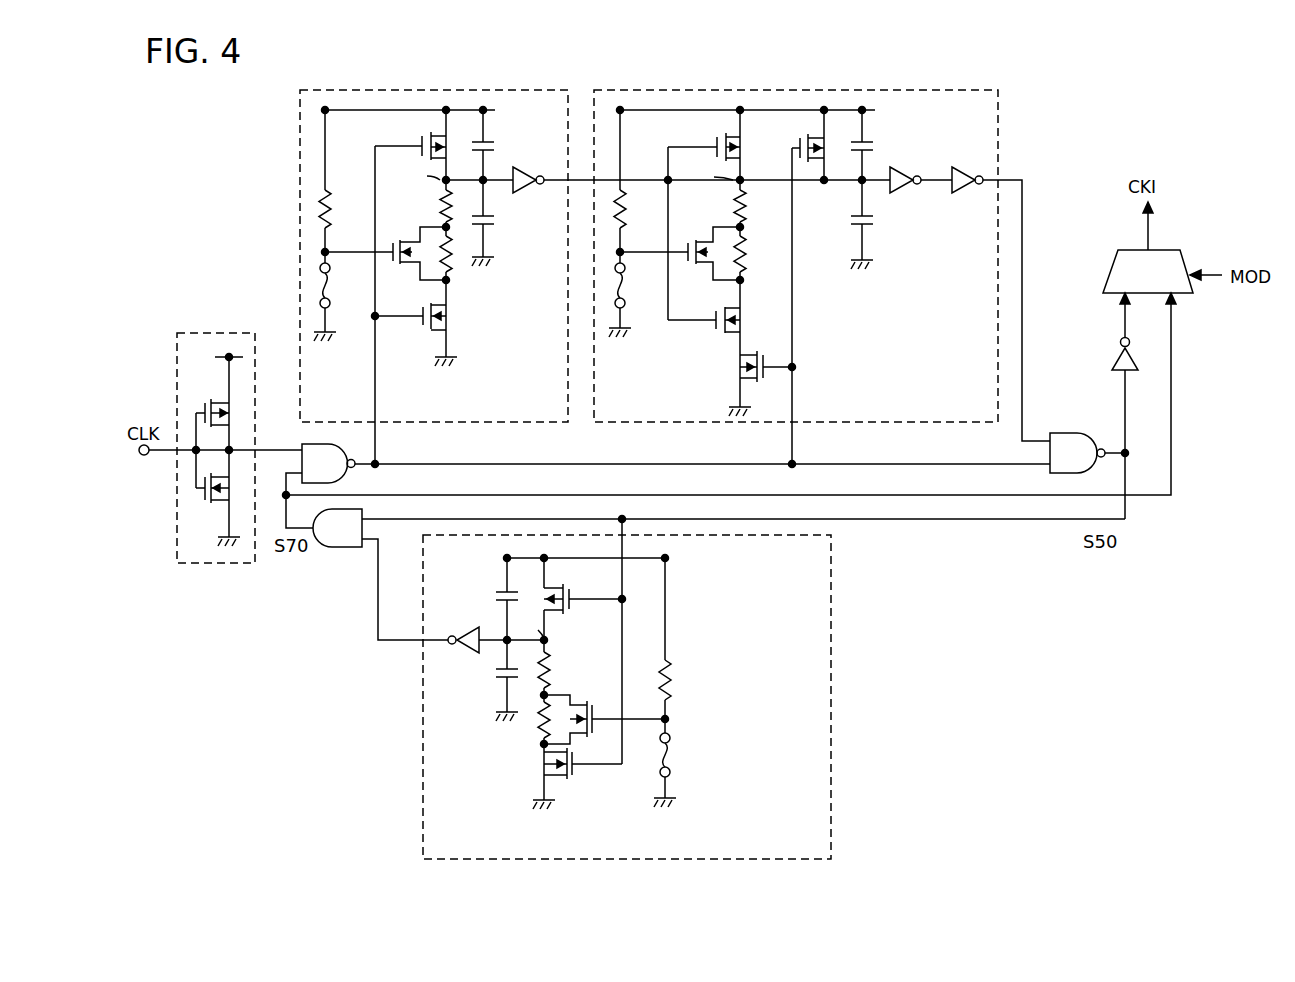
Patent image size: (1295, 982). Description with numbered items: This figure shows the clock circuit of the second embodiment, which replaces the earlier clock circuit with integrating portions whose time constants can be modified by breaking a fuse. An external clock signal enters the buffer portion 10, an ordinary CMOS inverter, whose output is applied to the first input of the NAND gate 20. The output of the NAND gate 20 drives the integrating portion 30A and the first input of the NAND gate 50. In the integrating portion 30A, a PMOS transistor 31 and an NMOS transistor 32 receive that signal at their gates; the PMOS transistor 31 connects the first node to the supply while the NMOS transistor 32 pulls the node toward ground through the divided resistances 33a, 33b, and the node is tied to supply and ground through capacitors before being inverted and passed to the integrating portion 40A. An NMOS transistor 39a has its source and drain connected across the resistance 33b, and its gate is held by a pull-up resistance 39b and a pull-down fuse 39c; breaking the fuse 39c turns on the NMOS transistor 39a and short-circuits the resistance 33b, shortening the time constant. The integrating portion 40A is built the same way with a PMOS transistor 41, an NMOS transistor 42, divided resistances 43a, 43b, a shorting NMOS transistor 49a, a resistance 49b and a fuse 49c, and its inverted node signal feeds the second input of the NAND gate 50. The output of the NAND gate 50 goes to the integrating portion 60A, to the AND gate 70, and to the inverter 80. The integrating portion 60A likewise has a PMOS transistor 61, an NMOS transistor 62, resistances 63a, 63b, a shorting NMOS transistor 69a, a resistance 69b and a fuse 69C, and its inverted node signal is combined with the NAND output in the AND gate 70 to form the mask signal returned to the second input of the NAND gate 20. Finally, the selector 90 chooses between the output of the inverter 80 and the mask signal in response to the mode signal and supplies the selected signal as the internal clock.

The buffer portion 10 is at (222, 330).
The NAND gate 20 is at (347, 476).
The integrating portion 30A is at (434, 277).
The PMOS transistor 31 is at (418, 138).
The NMOS transistor 32 is at (433, 331).
The resistance 33a is at (440, 210).
The resistance 33b is at (454, 268).
The NMOS transistor 39a is at (412, 272).
The pull-up resistance 39b is at (333, 208).
The fuse 39c is at (333, 292).
The integrating portion 40A is at (796, 277).
The PMOS transistor 41 is at (713, 140).
The NMOS transistor 42 is at (738, 334).
The resistance 43a is at (735, 212).
The resistance 43b is at (745, 262).
The NMOS transistor 49a is at (712, 272).
The resistance 49b is at (647, 210).
The fuse 49c is at (628, 292).
The NAND gate 50 is at (1068, 432).
The integrating portion 60A is at (630, 707).
The PMOS transistor 61 is at (572, 590).
The NMOS transistor 62 is at (573, 778).
The resistance 63a is at (550, 665).
The resistance 63b is at (540, 722).
The NMOS transistor 69a is at (568, 698).
The resistance 69b is at (672, 673).
The fuse 69C is at (672, 751).
The AND gate 70 is at (342, 552).
The inverter 80 is at (1110, 358).
The selector 90 is at (1110, 262).